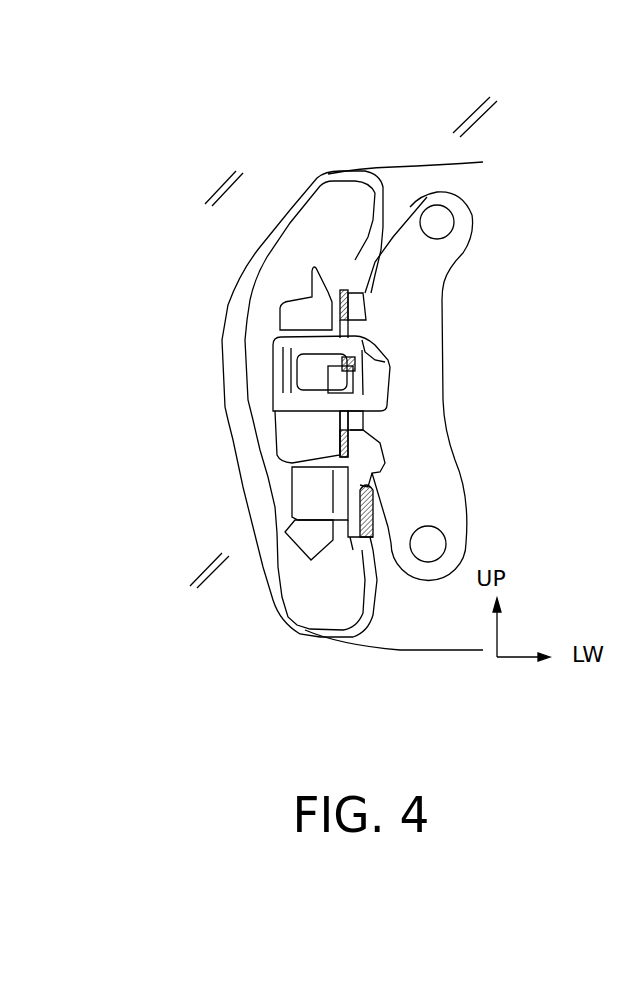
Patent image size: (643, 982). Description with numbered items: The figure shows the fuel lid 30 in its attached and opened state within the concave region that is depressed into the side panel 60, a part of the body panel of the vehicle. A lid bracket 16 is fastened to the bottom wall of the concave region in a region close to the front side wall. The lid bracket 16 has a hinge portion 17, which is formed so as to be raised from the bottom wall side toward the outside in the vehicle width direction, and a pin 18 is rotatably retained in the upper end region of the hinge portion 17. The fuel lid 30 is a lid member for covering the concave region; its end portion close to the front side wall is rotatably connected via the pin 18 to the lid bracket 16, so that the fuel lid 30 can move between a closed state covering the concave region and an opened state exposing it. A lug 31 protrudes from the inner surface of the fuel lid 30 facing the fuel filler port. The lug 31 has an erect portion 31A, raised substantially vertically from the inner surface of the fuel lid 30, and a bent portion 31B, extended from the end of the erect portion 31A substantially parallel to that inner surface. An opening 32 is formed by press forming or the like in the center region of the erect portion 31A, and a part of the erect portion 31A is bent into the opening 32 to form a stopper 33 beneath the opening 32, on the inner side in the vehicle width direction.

The lid bracket 16 is at (420, 500).
The hinge portion 17 is at (333, 292).
The pin 18 is at (375, 293).
The fuel lid 30 is at (315, 205).
The lug 31 is at (348, 362).
The erect portion 31A is at (281, 338).
The bent portion 31B is at (373, 360).
The opening 32 is at (316, 380).
The stopper 33 is at (355, 377).
The side panel 60 is at (391, 119).